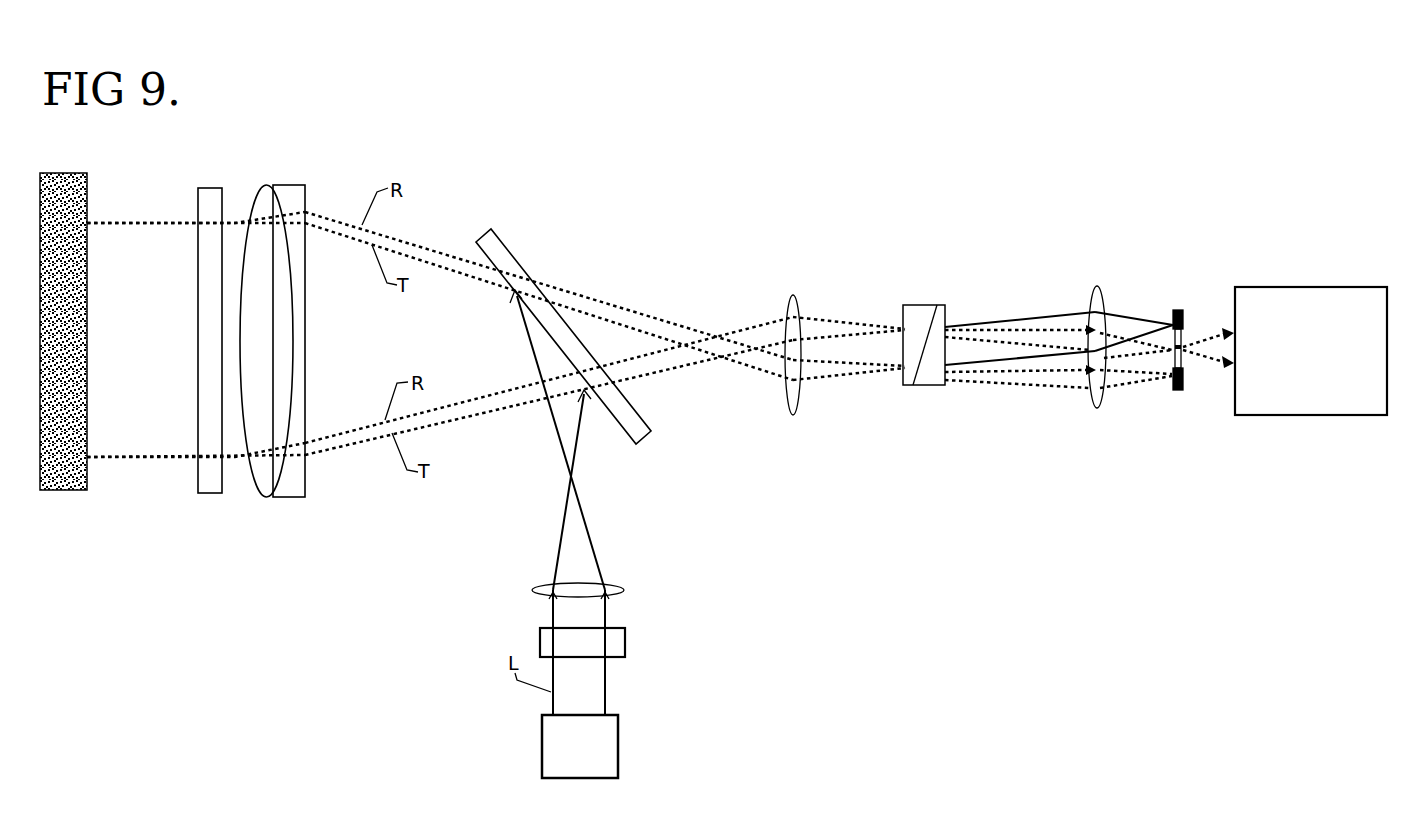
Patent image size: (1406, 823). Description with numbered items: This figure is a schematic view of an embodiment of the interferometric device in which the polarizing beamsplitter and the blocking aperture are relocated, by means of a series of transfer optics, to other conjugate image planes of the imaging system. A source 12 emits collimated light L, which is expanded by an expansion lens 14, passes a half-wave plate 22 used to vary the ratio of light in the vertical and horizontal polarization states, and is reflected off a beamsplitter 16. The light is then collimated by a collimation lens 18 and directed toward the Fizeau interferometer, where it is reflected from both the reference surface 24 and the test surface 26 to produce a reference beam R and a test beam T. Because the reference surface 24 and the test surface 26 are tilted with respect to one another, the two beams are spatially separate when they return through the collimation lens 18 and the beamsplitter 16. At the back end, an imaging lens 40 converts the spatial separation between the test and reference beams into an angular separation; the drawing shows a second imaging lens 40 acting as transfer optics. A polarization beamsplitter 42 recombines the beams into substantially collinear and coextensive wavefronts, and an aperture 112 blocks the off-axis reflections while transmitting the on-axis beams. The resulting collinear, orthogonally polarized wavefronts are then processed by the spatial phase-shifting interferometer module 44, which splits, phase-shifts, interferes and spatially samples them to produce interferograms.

The source of collimated light 12 is at (606, 746).
The expansion lens 14 is at (604, 609).
The beamsplitter 16 is at (563, 316).
The collimation lens 18 is at (297, 318).
The half-wave plate 22 is at (609, 660).
The reference surface 24 is at (222, 319).
The test surface 26 is at (87, 307).
The imaging lens 40 is at (967, 325).
The polarization beamsplitter 42 is at (918, 369).
The spatial phase-shifting interferometer module 44 is at (1311, 376).
The aperture 112 is at (1207, 322).